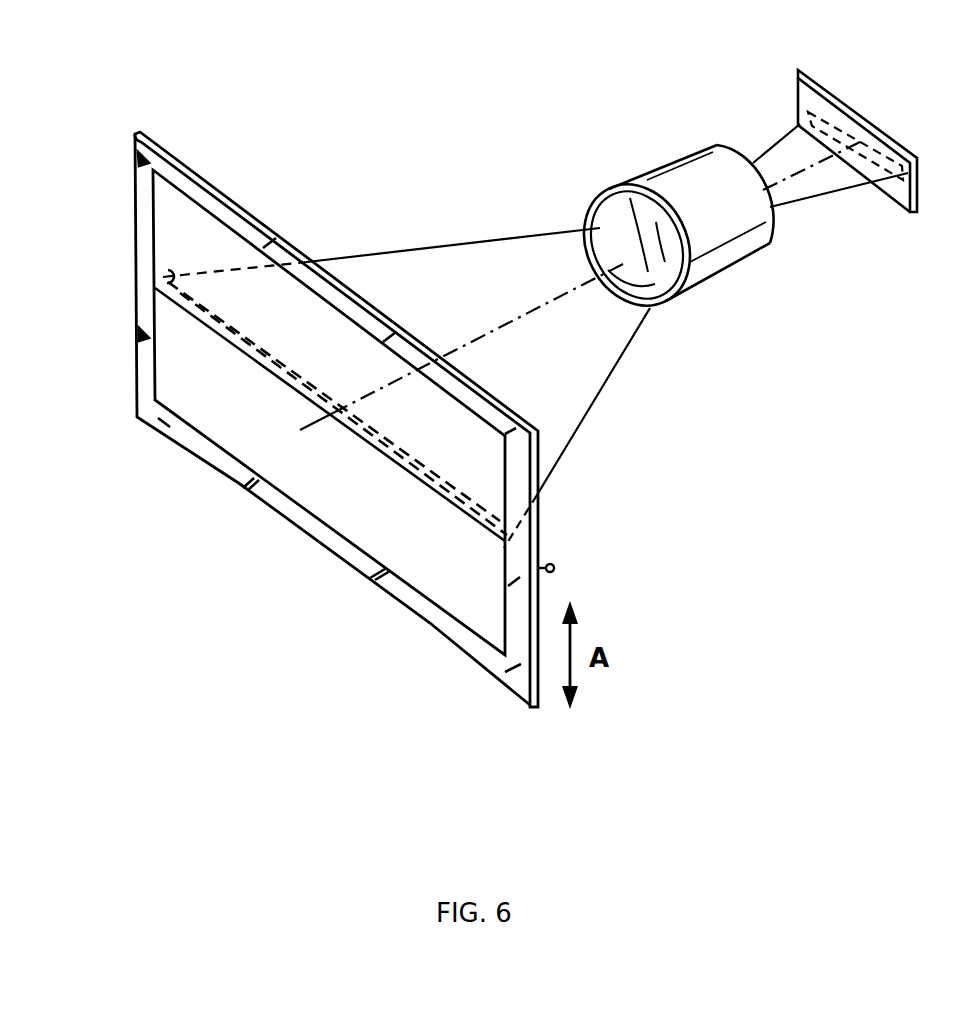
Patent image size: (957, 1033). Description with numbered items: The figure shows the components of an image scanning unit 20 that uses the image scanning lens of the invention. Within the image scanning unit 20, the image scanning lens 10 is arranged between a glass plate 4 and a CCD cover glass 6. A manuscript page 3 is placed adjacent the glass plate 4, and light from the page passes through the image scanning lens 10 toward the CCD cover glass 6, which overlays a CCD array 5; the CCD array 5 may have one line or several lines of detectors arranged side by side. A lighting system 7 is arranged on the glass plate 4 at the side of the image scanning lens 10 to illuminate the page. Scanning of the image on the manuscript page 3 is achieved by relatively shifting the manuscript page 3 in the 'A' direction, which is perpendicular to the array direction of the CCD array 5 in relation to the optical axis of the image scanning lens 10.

The image scanning unit 20 is at (452, 110).
The manuscript page 3 is at (425, 607).
The glass plate 4 is at (492, 659).
The CCD array 5 is at (848, 128).
The CCD cover glass 6 is at (794, 96).
The lighting system 7 is at (556, 565).
The image scanning lens 10 is at (723, 253).